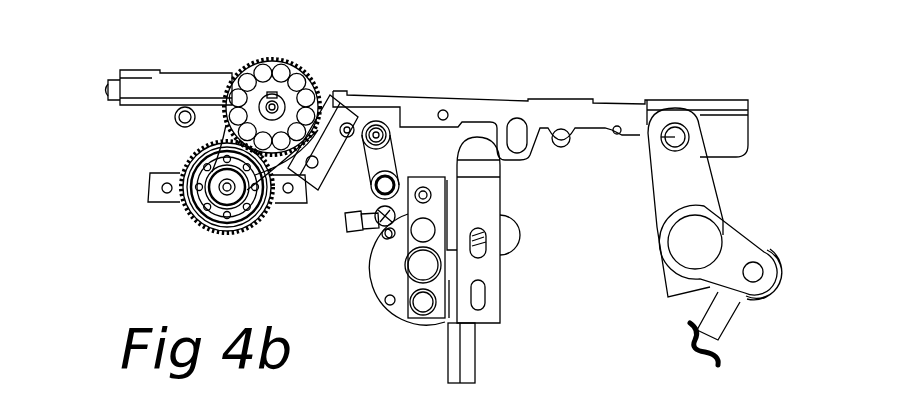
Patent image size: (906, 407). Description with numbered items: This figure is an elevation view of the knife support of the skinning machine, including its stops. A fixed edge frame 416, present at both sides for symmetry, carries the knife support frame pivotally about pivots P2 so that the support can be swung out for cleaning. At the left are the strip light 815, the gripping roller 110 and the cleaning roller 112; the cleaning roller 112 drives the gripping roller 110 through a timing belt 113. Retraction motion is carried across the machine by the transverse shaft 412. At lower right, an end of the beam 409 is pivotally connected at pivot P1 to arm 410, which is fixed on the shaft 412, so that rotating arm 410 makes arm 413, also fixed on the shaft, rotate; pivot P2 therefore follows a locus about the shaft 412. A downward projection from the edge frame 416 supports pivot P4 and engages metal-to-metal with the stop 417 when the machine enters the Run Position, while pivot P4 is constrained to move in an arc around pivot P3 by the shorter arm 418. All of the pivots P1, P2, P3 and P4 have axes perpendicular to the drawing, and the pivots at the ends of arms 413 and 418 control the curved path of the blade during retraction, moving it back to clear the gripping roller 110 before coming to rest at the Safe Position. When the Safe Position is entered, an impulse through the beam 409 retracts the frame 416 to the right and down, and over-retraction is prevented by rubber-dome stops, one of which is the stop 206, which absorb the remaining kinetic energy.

The timing belt 113 is at (245, 64).
The strip light 815 is at (120, 103).
The gripping roller 110 is at (287, 58).
The cleaning roller 112 is at (180, 222).
The stop 417 is at (358, 90).
The edge frame 416 is at (483, 105).
The shorter arm 418 is at (396, 148).
The pivot P3 is at (392, 134).
The pivot P4 is at (370, 183).
The stop 206 is at (500, 176).
The arm 413 is at (702, 176).
The pivot P2 is at (654, 150).
The arm 410 is at (742, 246).
The transverse shaft 412 is at (696, 242).
The pivot P1 is at (760, 264).
The beam 409 is at (712, 326).